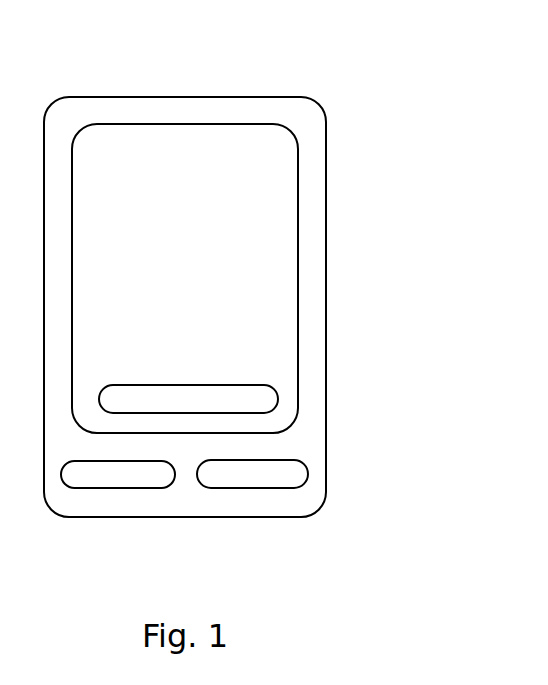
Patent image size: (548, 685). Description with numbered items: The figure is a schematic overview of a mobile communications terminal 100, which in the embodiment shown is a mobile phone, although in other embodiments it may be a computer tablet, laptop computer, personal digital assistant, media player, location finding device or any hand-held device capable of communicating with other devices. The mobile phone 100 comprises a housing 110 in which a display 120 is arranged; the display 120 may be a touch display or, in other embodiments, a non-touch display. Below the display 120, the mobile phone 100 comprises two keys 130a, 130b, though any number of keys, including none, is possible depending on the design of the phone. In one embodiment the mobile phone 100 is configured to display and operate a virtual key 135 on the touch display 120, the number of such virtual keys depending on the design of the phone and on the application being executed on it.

The mobile communications terminal 100 is at (65, 79).
The housing 110 is at (326, 208).
The display 120 is at (298, 280).
The virtual key 135 is at (277, 399).
The key 130a is at (118, 488).
The key 130b is at (308, 474).